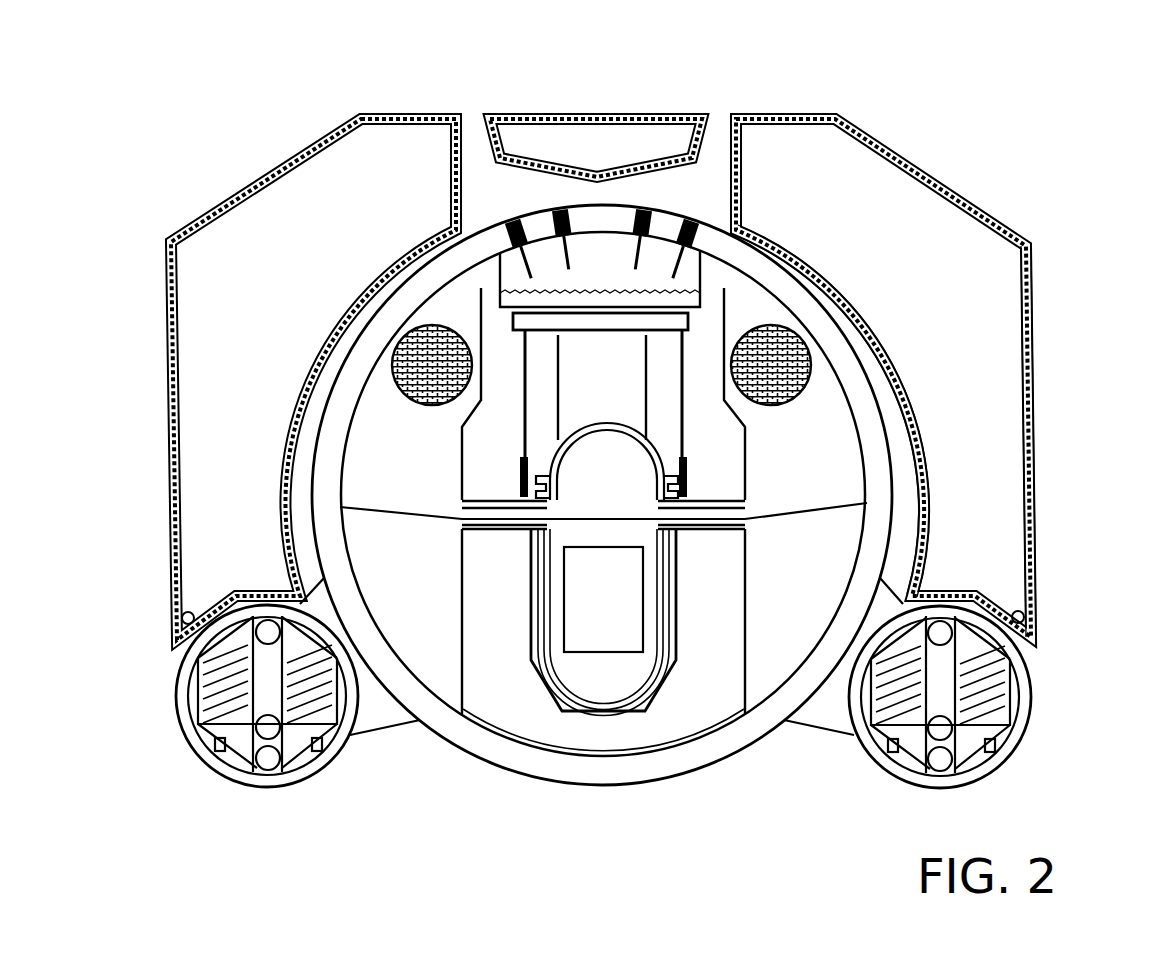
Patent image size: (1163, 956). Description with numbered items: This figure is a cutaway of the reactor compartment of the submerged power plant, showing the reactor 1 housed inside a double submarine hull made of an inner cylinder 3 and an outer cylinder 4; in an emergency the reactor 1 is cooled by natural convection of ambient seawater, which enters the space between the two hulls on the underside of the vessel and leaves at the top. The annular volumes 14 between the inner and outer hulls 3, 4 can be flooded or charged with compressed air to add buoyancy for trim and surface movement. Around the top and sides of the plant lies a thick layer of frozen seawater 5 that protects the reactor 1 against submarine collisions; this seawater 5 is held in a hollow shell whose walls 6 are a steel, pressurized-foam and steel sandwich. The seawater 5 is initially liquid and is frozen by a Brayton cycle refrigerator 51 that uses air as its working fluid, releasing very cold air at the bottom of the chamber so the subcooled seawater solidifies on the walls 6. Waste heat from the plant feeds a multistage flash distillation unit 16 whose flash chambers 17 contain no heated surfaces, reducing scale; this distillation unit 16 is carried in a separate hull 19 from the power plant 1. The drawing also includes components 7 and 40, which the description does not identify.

The reactor 1 is at (588, 670).
The inner cylinder 3 is at (908, 401).
The outer cylinder 4 is at (868, 476).
The frozen seawater 5 is at (315, 198).
The walls 6 is at (1030, 268).
The inner housing 7 is at (702, 693).
The annular volumes 14 is at (847, 360).
The multistage flash distillation unit 16 is at (988, 730).
The flash chambers 17 is at (995, 672).
The separate hull 19 is at (1032, 700).
The lamps 40 is at (660, 222).
The Brayton cycle refrigerator 51 is at (1016, 611).